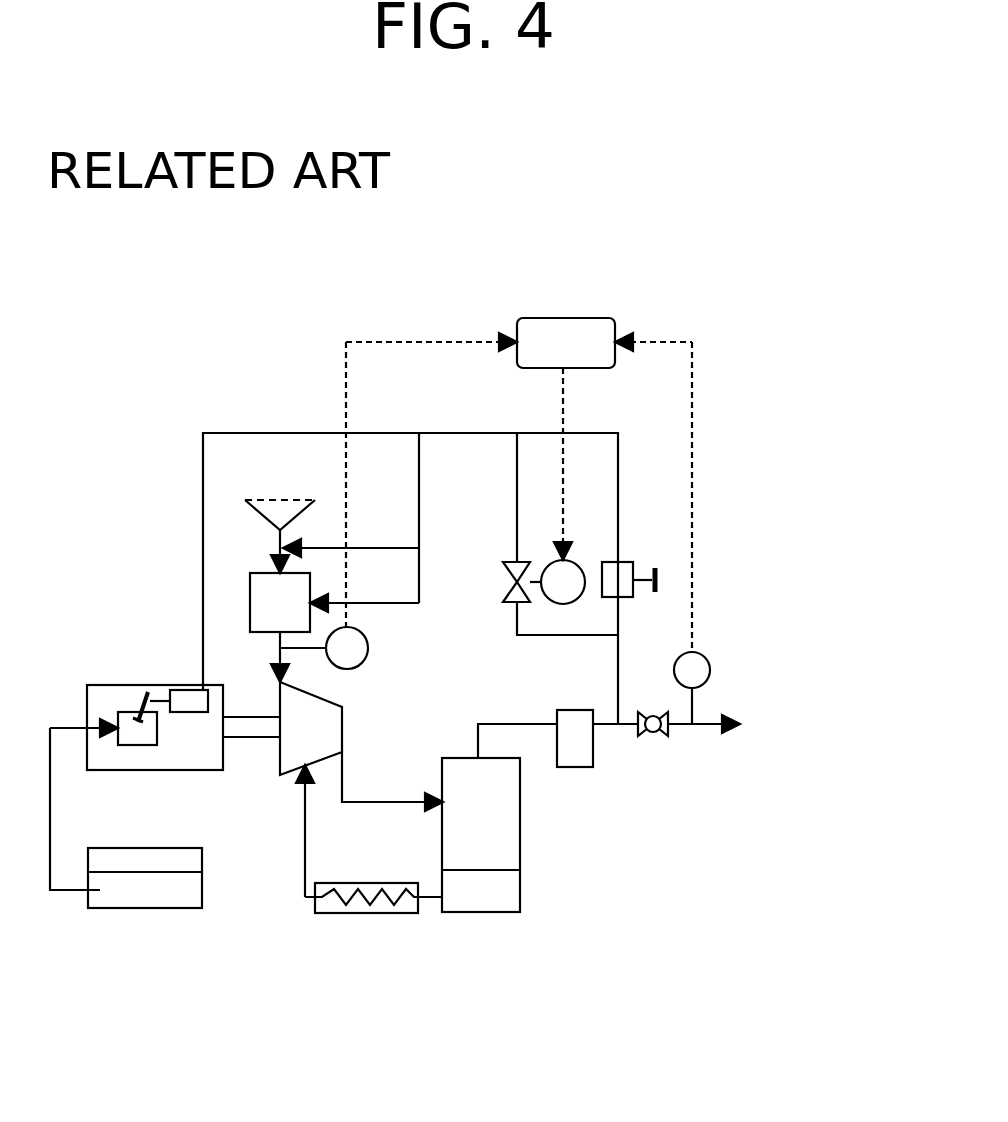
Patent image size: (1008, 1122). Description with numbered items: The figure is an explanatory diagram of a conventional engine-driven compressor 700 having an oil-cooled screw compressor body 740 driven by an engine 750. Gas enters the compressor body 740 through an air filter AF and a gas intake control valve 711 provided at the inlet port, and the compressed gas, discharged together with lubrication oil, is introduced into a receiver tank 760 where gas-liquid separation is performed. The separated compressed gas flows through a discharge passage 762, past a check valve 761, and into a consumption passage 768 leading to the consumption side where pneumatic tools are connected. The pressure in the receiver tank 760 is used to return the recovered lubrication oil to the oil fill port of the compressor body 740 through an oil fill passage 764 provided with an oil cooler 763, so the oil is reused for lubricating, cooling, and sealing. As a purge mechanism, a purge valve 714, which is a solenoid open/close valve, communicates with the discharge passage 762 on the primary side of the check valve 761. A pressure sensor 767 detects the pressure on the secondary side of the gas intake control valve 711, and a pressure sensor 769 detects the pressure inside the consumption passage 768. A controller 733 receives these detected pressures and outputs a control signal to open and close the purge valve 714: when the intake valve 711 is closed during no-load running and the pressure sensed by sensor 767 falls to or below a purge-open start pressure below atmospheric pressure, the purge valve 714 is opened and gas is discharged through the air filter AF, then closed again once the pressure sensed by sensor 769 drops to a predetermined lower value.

The engine-driven compressor 700 is at (232, 372).
The controller 733 is at (615, 325).
The air filter AF is at (274, 510).
The gas intake control valve 711 is at (252, 600).
The purge valve 714 is at (505, 562).
The compressor body 740 is at (283, 775).
The engine 750 is at (127, 775).
The receiver tank 760 is at (520, 855).
The check valve 761 is at (663, 708).
The discharge passage 762 is at (498, 720).
The oil cooler 763 is at (380, 920).
The oil fill passage 764 is at (307, 852).
The pressure sensor 767 is at (355, 666).
The consumption passage 768 is at (700, 728).
The pressure sensor 769 is at (708, 657).